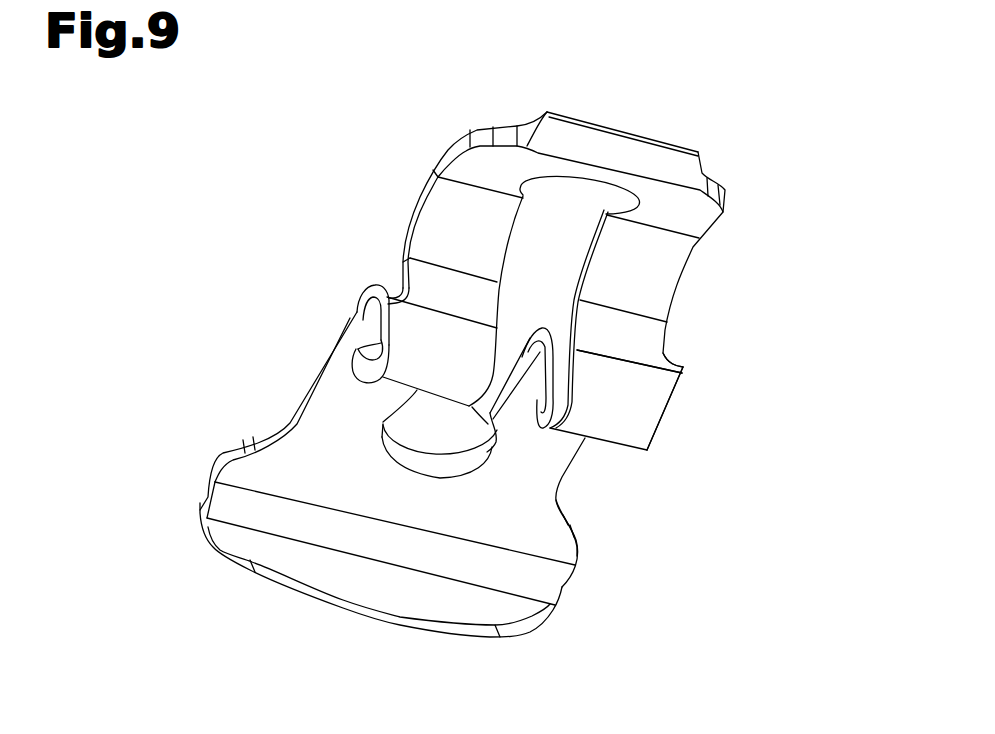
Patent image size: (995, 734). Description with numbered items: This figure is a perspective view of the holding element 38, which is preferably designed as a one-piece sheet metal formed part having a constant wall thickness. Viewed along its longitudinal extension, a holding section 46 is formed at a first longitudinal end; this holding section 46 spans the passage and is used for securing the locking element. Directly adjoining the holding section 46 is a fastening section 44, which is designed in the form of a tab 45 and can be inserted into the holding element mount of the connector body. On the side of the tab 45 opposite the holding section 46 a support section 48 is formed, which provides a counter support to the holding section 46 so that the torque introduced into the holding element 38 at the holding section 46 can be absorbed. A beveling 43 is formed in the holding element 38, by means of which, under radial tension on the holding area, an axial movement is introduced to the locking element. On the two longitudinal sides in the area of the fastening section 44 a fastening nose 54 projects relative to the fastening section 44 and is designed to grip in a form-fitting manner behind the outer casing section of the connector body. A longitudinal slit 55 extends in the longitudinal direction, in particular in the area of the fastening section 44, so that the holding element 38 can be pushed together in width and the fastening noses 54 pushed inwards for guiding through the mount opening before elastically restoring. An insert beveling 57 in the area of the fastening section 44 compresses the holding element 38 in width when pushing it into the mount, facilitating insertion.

The holding element 38 is at (682, 92).
The beveling 43 is at (258, 432).
The fastening section 44 is at (693, 390).
The tab 45 is at (627, 420).
The holding section 46 is at (588, 563).
The support section 48 is at (517, 120).
The fastening nose 54 is at (372, 340).
The longitudinal slit 55 is at (553, 243).
The insert beveling 57 is at (362, 387).